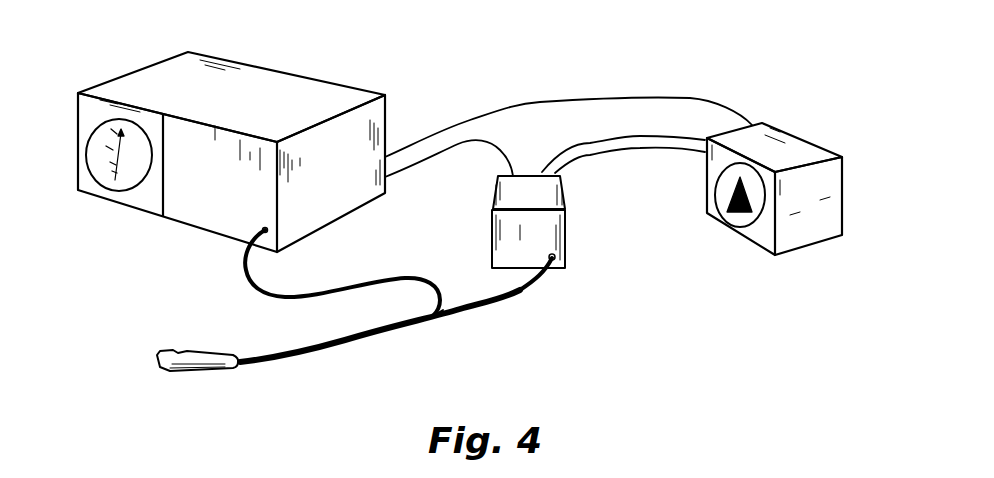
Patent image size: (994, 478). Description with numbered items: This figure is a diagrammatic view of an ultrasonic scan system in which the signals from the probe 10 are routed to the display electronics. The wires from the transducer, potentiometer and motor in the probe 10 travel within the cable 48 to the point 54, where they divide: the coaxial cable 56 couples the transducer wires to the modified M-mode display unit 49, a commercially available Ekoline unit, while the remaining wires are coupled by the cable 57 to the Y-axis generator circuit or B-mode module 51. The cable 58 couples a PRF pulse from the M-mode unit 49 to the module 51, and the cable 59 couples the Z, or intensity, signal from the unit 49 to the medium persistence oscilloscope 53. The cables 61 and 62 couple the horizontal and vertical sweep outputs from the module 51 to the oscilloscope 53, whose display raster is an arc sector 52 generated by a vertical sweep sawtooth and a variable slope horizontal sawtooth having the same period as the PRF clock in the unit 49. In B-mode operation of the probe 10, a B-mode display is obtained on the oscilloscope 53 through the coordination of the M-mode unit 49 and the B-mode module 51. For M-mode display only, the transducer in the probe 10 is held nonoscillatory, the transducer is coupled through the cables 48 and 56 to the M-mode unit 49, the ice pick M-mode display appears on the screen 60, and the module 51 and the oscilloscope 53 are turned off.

The probe 10 is at (190, 377).
The cable 48 is at (345, 342).
The M-mode display unit 49 is at (277, 72).
The Y-axis generator circuit 51 is at (567, 228).
The arc sector 52 is at (736, 217).
The oscilloscope 53 is at (805, 237).
The point 54 is at (445, 307).
The coaxial cable 56 is at (244, 281).
The cable 57 is at (523, 298).
The cable 58 is at (460, 146).
The cable 59 is at (540, 104).
The screen 60 is at (132, 180).
The cable 61 is at (628, 133).
The cable 62 is at (628, 153).